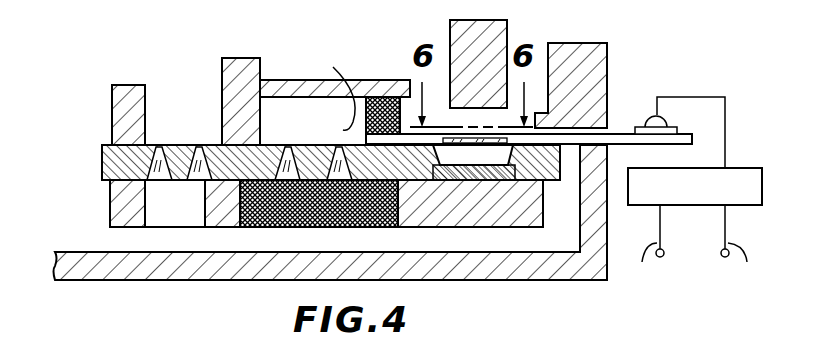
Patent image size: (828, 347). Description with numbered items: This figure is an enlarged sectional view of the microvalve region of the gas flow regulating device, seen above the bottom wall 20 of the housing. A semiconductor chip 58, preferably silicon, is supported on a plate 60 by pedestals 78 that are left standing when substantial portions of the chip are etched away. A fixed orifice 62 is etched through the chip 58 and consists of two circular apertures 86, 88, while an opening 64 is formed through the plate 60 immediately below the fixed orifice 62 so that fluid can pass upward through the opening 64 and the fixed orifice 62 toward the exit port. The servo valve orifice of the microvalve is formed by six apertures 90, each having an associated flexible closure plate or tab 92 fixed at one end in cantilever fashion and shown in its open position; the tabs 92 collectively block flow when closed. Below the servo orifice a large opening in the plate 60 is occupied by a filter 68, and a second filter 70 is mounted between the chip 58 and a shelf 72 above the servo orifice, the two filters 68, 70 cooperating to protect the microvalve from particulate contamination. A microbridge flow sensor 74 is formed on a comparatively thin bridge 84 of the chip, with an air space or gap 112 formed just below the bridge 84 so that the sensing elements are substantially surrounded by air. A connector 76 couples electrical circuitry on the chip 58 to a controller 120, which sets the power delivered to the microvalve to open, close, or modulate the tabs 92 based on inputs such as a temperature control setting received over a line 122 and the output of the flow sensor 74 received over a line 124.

The bottom wall 20 is at (125, 277).
The semiconductor chip 58 is at (102, 148).
The plate 60 is at (122, 207).
The fixed orifice 62 is at (184, 125).
The opening 64 is at (145, 207).
The filter 68 is at (368, 226).
The filter 70 is at (381, 97).
The shelf 72 is at (278, 80).
The microbridge flow sensor 74 is at (528, 176).
The connector 76 is at (650, 123).
The pedestals 78 is at (102, 172).
The bridge 84 is at (473, 143).
The aperture 86 is at (161, 146).
The aperture 88 is at (202, 146).
The apertures 90 is at (290, 146).
The closure plate or tab 92 is at (337, 88).
The air space or gap 112 is at (492, 178).
The controller 120 is at (746, 167).
The line 122 is at (640, 248).
The line 124 is at (744, 248).